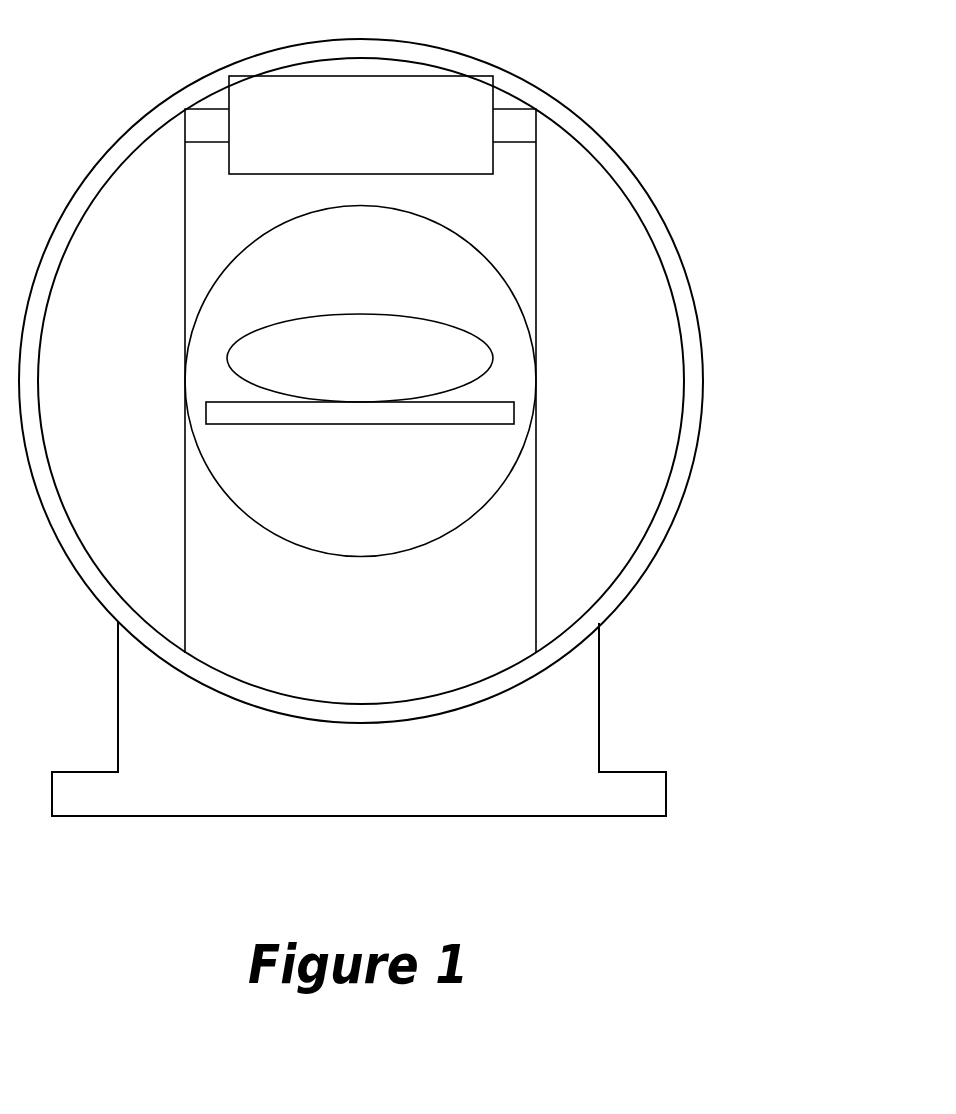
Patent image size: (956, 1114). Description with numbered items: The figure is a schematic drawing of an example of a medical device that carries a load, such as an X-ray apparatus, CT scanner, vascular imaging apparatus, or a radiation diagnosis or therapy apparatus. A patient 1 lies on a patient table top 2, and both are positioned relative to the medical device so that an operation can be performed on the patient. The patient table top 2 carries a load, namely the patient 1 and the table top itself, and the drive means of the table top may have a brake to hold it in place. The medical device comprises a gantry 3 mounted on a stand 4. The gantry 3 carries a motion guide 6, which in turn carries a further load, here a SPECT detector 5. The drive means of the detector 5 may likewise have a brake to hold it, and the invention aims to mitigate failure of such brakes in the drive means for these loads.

The patient 1 is at (462, 359).
The patient table top 2 is at (472, 414).
The gantry 3 is at (635, 185).
The stand 4 is at (550, 728).
The SPECT detector 5 is at (462, 108).
The motion guide 6 is at (610, 275).